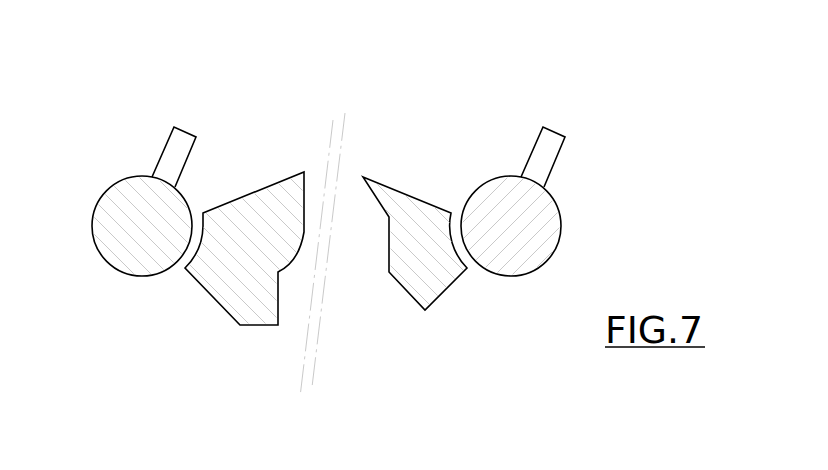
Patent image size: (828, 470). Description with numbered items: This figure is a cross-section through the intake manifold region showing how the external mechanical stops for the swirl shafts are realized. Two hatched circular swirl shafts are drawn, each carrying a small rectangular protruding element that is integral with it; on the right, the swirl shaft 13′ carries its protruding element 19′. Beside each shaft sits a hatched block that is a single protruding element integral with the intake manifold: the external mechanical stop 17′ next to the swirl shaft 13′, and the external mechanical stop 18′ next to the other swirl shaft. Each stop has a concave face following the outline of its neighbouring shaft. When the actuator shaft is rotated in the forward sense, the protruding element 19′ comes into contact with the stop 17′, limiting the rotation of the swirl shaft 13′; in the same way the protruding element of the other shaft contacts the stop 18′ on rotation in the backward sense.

The swirl shaft 13′ is at (507, 255).
The external mechanical stop 17′ is at (395, 210).
The external mechanical stop 18′ is at (268, 195).
The protruding element 19′ is at (538, 148).